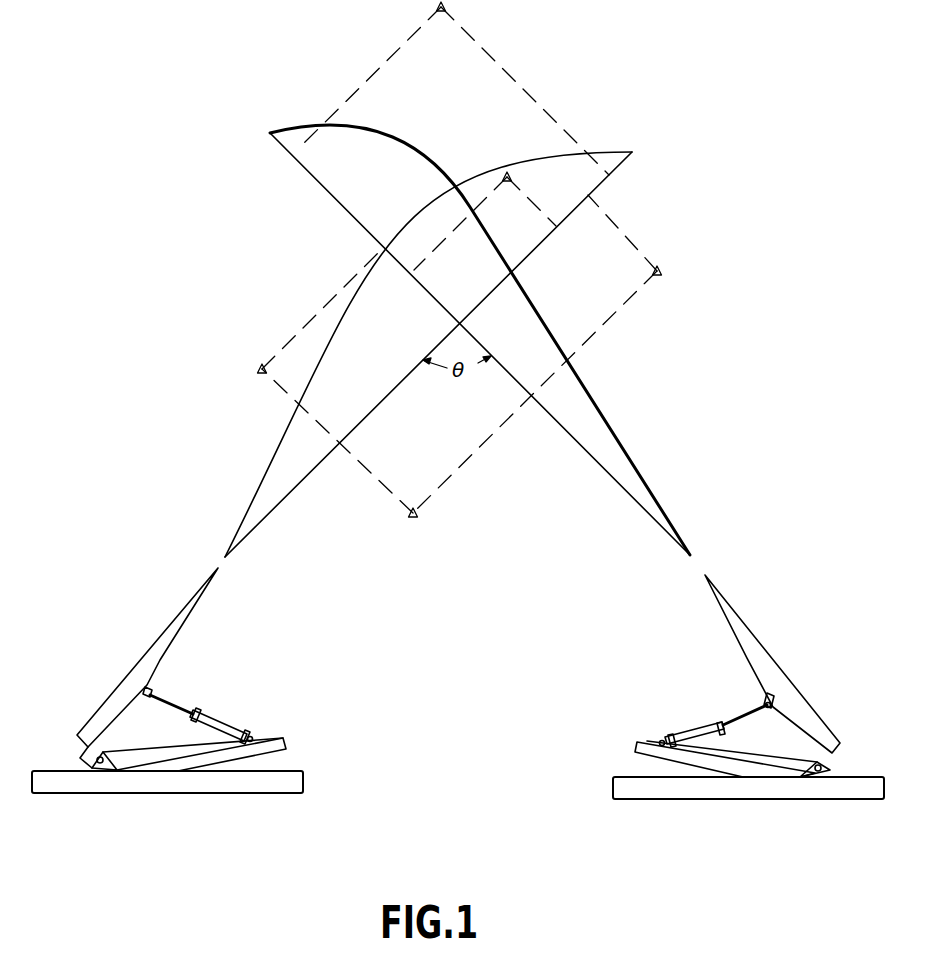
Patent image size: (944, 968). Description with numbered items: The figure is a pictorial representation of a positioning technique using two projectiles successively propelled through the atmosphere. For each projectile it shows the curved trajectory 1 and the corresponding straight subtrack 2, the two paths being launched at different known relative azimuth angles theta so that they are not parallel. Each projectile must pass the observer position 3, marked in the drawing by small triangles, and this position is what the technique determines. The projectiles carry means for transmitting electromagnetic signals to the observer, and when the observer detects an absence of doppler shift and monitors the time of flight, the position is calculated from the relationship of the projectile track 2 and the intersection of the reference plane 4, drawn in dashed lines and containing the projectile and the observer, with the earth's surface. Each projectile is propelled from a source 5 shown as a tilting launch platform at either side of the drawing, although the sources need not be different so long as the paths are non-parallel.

The trajectory 1 is at (383, 133).
The subtrack 2 is at (370, 412).
The observer position 3 is at (508, 183).
The reference plane 4 is at (500, 64).
The source of the projectiles 5 is at (772, 628).